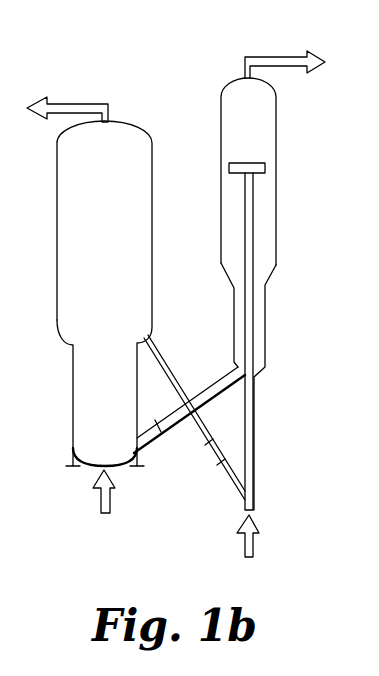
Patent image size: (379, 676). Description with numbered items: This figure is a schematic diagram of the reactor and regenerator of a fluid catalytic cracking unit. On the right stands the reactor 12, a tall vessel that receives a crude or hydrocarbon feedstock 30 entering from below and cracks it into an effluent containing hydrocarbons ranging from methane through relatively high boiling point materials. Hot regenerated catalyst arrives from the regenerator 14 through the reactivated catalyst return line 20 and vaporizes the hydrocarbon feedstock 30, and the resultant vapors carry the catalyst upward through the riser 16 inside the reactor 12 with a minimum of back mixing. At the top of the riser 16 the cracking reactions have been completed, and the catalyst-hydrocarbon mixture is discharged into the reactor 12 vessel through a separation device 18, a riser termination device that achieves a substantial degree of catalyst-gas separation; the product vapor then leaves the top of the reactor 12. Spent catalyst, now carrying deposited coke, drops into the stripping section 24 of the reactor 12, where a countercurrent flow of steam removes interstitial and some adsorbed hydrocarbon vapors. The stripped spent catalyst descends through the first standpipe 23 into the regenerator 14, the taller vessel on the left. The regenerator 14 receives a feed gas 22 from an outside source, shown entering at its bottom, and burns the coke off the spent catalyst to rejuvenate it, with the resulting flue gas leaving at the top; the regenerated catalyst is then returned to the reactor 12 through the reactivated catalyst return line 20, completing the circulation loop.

The reactor 12 is at (276, 110).
The regenerator 14 is at (153, 165).
The riser 16 is at (245, 225).
The separation device 18 is at (265, 168).
The reactivated catalyst return line 20 is at (170, 370).
The feed gas 22 is at (98, 498).
The first standpipe 23 is at (183, 420).
The stripping section 24 is at (240, 308).
The hydrocarbon feedstock 30 is at (255, 543).